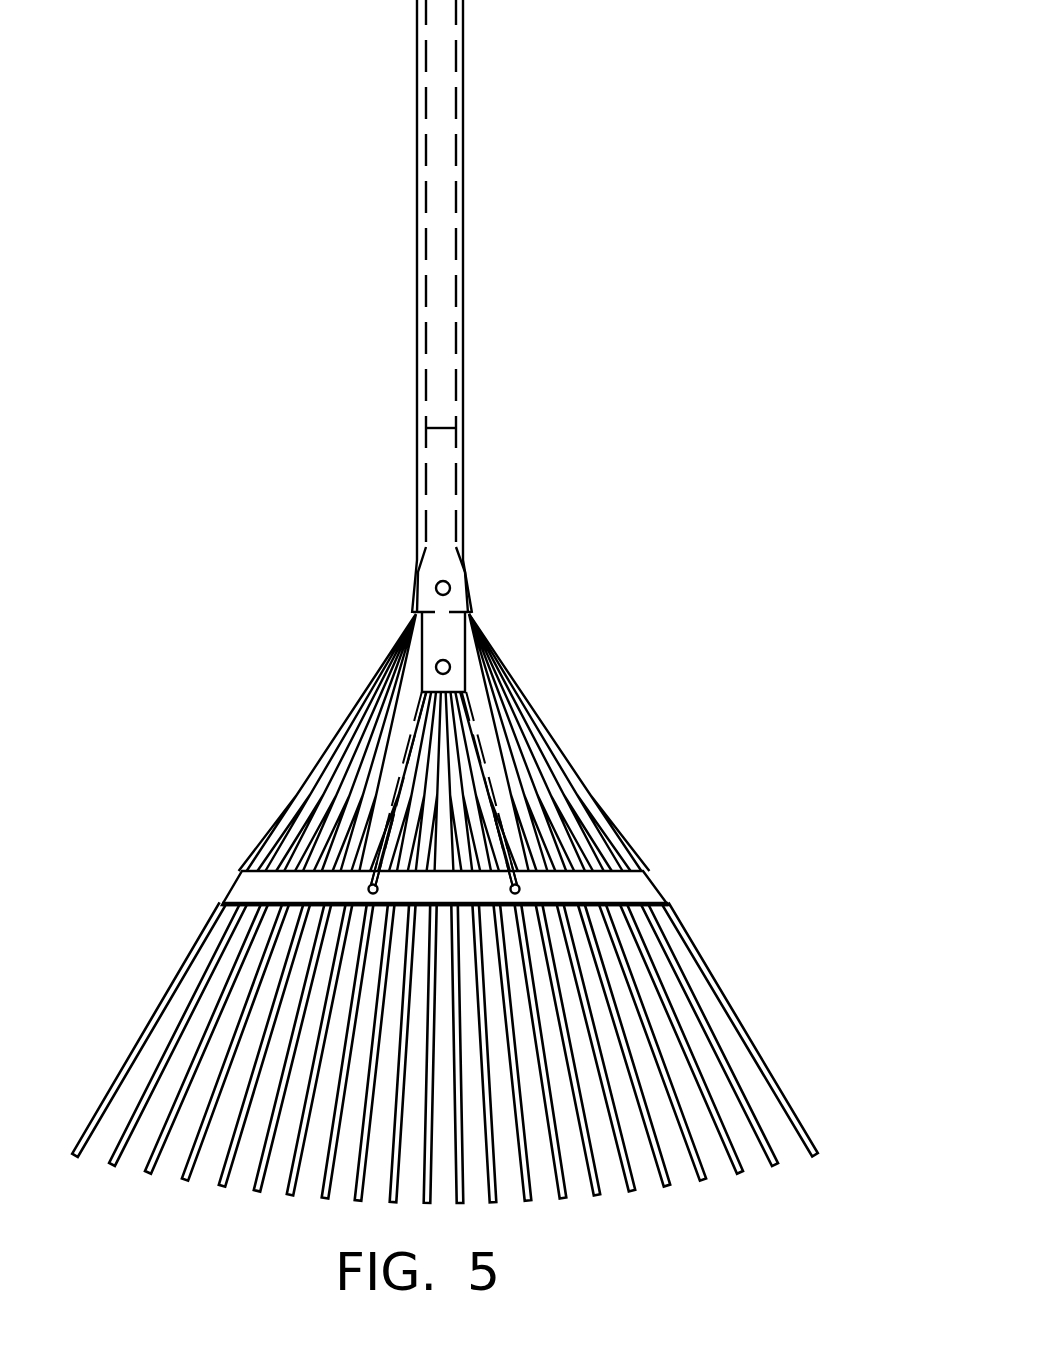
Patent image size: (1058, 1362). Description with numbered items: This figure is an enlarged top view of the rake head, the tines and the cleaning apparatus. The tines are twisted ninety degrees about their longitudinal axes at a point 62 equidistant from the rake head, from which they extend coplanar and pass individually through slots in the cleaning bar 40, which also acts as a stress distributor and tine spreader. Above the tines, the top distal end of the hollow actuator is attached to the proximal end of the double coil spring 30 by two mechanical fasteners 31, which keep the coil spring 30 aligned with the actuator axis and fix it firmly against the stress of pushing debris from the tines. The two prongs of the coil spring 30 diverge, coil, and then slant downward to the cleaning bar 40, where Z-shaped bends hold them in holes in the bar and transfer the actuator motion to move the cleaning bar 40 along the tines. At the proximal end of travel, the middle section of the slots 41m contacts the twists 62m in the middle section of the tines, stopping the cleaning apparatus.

The coil spring 30 is at (470, 738).
The mechanical fasteners 31 is at (453, 665).
The cleaning bar 40 is at (658, 888).
The middle section of the plurality of slots 41m is at (432, 866).
The twist point of the tines 62 is at (593, 790).
The twists in the middle section of the tines 62m is at (450, 855).